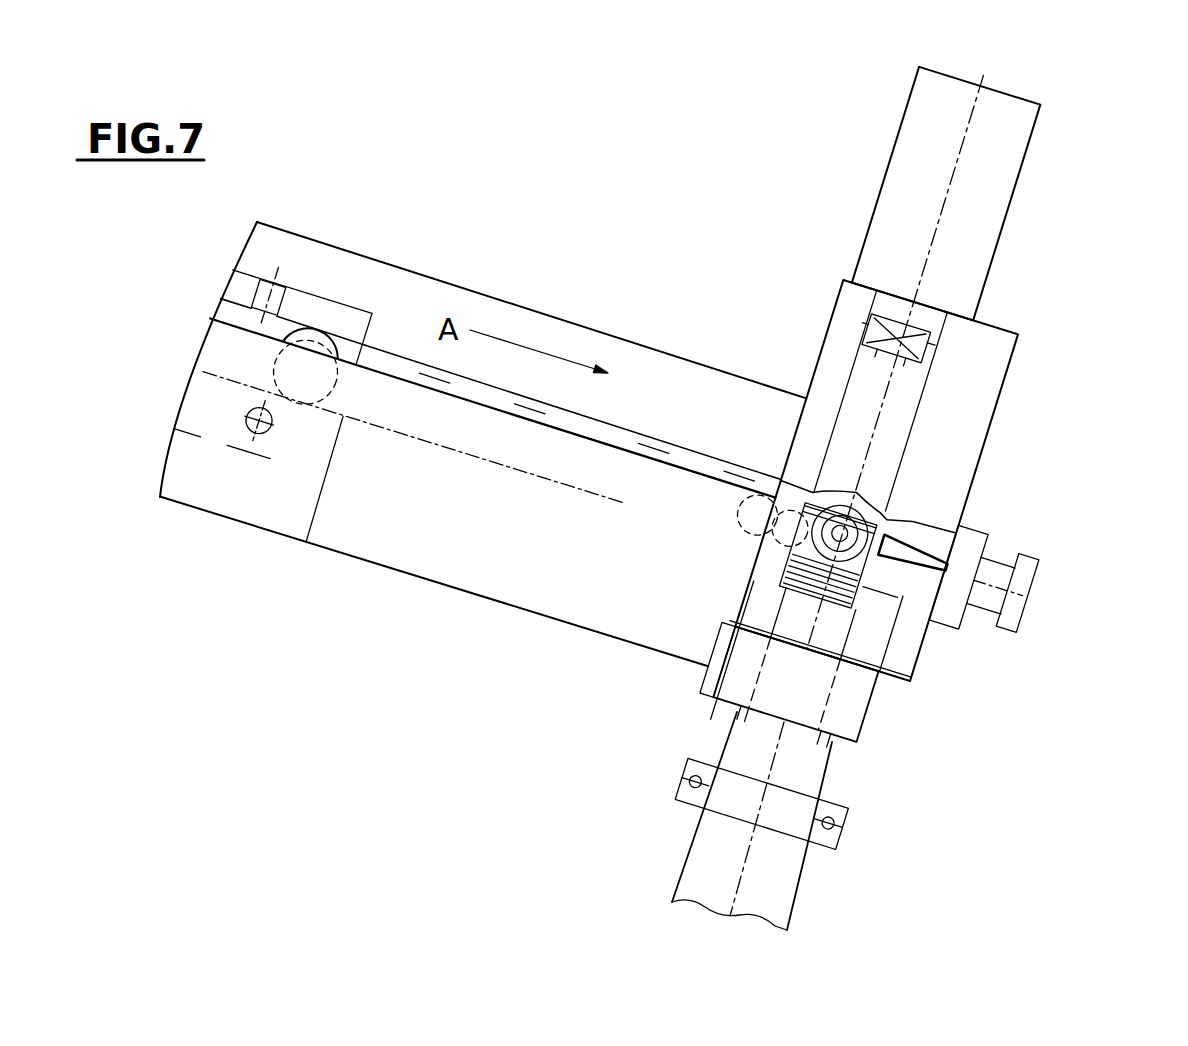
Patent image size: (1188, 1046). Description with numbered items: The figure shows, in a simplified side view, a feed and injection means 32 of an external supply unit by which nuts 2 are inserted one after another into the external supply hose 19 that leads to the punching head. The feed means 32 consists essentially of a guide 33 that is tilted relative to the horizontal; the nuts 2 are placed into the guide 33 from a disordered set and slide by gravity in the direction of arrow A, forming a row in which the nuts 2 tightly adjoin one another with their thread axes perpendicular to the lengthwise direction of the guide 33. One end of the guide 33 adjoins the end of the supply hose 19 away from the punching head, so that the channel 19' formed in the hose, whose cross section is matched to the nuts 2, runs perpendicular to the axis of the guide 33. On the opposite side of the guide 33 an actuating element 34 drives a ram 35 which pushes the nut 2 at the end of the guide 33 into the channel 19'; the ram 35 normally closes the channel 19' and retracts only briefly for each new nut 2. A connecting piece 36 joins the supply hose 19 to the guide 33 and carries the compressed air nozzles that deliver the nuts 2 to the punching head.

The nut 2 is at (328, 314).
The supply hose 19 is at (825, 821).
The channel 19' is at (810, 736).
The feed and injection means 32 is at (670, 315).
The guide 33 is at (570, 421).
The actuating element 34 is at (1013, 130).
The ram 35 is at (888, 435).
The connecting piece 36 is at (865, 715).